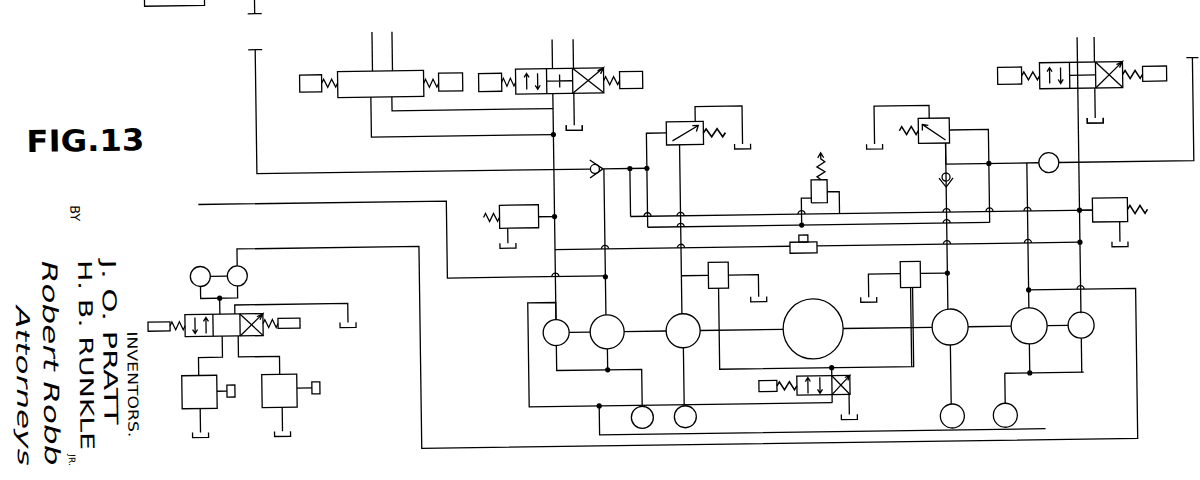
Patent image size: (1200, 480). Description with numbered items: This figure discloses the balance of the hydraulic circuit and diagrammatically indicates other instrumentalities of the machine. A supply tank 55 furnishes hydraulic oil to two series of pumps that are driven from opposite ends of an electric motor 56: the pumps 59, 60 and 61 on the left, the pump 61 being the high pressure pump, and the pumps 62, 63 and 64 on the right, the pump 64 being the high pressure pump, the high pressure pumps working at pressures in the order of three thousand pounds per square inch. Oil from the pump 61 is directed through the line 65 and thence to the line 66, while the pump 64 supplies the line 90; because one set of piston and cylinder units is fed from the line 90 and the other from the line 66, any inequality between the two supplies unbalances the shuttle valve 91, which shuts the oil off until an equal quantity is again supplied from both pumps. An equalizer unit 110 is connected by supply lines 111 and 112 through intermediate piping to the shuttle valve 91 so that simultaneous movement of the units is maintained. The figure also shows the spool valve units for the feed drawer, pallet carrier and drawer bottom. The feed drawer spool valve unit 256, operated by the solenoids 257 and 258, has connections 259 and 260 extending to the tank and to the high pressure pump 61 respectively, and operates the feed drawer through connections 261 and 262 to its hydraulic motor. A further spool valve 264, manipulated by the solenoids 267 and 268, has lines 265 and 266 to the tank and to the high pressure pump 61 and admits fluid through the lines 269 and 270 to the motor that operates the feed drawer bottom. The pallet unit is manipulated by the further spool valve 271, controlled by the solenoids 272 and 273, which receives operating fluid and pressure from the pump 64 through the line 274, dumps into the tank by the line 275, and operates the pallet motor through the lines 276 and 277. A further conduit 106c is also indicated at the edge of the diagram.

The line 66 is at (250, 5).
The line 269 is at (370, 32).
The line 270 is at (396, 32).
The spool valve 264 is at (404, 70).
The solenoid 268 is at (448, 72).
The solenoid 267 is at (306, 73).
The solenoid 257 is at (490, 74).
The connection 262 is at (555, 41).
The connection 261 is at (577, 46).
The feed drawer spool valve unit 256 is at (586, 70).
The solenoid 258 is at (634, 74).
The line 265 is at (438, 112).
The connection 260 is at (552, 127).
The connection 259 is at (580, 124).
The supply tank 55 is at (578, 131).
The line 266 is at (378, 143).
The solenoid 272 is at (1012, 75).
The line 277 is at (1075, 42).
The line 276 is at (1097, 46).
The solenoid 273 is at (1155, 76).
The spool valve 271 is at (1075, 86).
The line 275 is at (1099, 103).
The line 274 is at (1082, 149).
The line 90 is at (1146, 172).
The conduit 106c is at (1143, 1).
The supply line 111 is at (218, 201).
The equalizer unit 110 is at (219, 258).
The supply line 112 is at (421, 345).
The line 65 is at (560, 231).
The pump 60 is at (616, 318).
The high pressure pump 61 is at (562, 345).
The pump 59 is at (668, 345).
The electric motor 56 is at (783, 342).
The shuttle valve 91 is at (803, 259).
The pump 62 is at (942, 352).
The pump 63 is at (1016, 345).
The high pressure pump 64 is at (1084, 346).